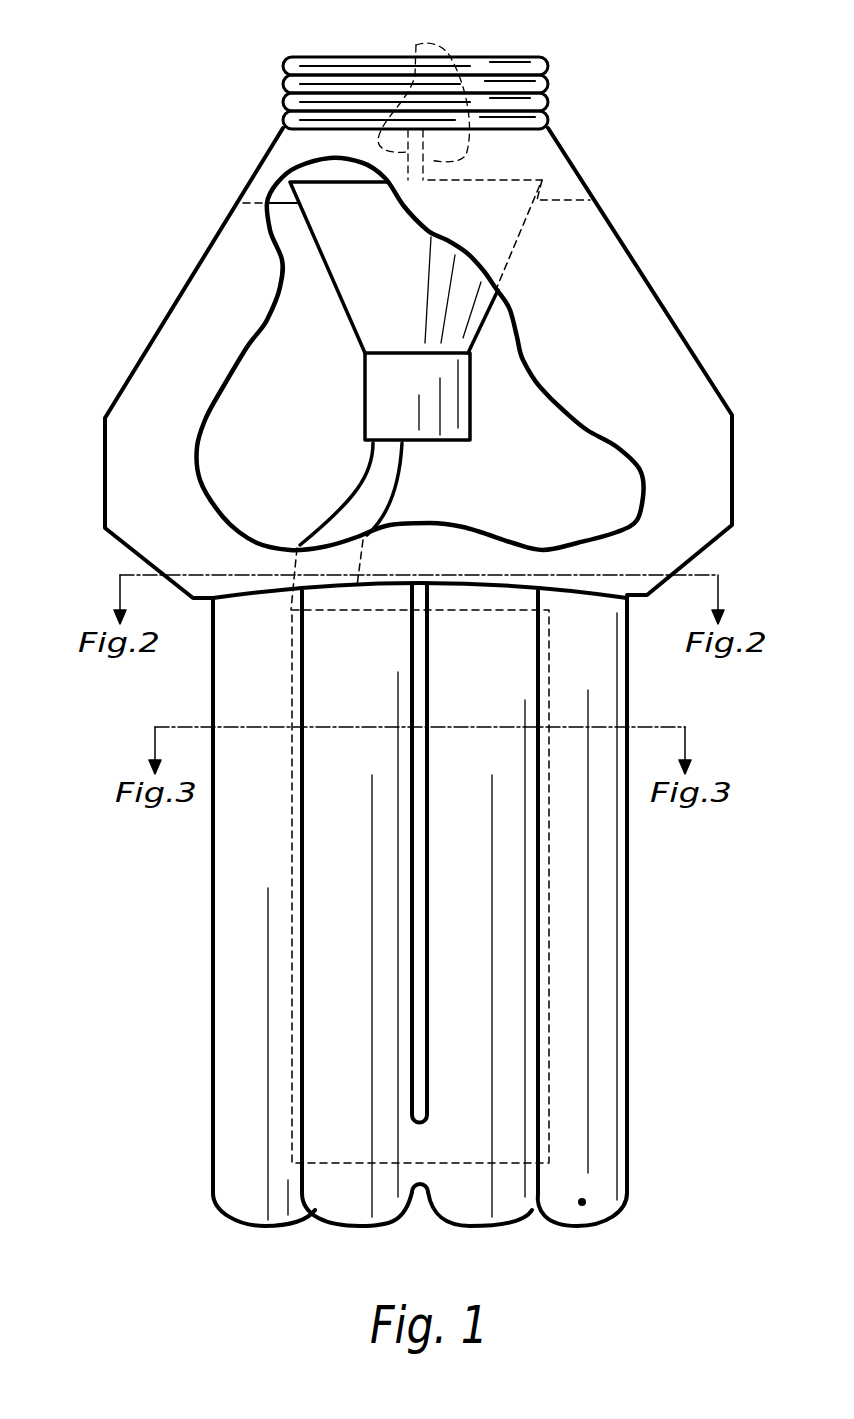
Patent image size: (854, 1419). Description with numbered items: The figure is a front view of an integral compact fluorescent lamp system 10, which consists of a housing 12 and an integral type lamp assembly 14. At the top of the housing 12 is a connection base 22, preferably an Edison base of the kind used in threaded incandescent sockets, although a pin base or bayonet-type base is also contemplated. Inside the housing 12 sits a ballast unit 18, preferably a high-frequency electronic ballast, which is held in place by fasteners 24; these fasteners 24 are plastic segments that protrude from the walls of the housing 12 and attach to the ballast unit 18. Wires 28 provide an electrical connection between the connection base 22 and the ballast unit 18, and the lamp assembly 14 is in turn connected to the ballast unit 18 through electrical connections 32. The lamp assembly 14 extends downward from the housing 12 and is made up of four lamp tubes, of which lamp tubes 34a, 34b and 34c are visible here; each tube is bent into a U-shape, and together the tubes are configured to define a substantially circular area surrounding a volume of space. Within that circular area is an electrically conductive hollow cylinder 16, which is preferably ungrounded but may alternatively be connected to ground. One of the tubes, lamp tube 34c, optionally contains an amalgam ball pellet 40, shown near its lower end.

The integral compact fluorescent lamp system 10 is at (103, 129).
The housing 12 is at (572, 152).
The integral type lamp assembly 14 is at (640, 1030).
The electrically conductive hollow cylinder 16 is at (560, 975).
The ballast unit 18 is at (470, 387).
The connection base 22 is at (507, 82).
The fasteners 24 is at (283, 200).
The wires 28 is at (416, 45).
The electrical connections 32 is at (360, 492).
The lamp tube 34a is at (250, 972).
The lamp tube 34b is at (349, 1192).
The lamp tube 34c is at (585, 1140).
The amalgam ball pellet 40 is at (582, 1202).